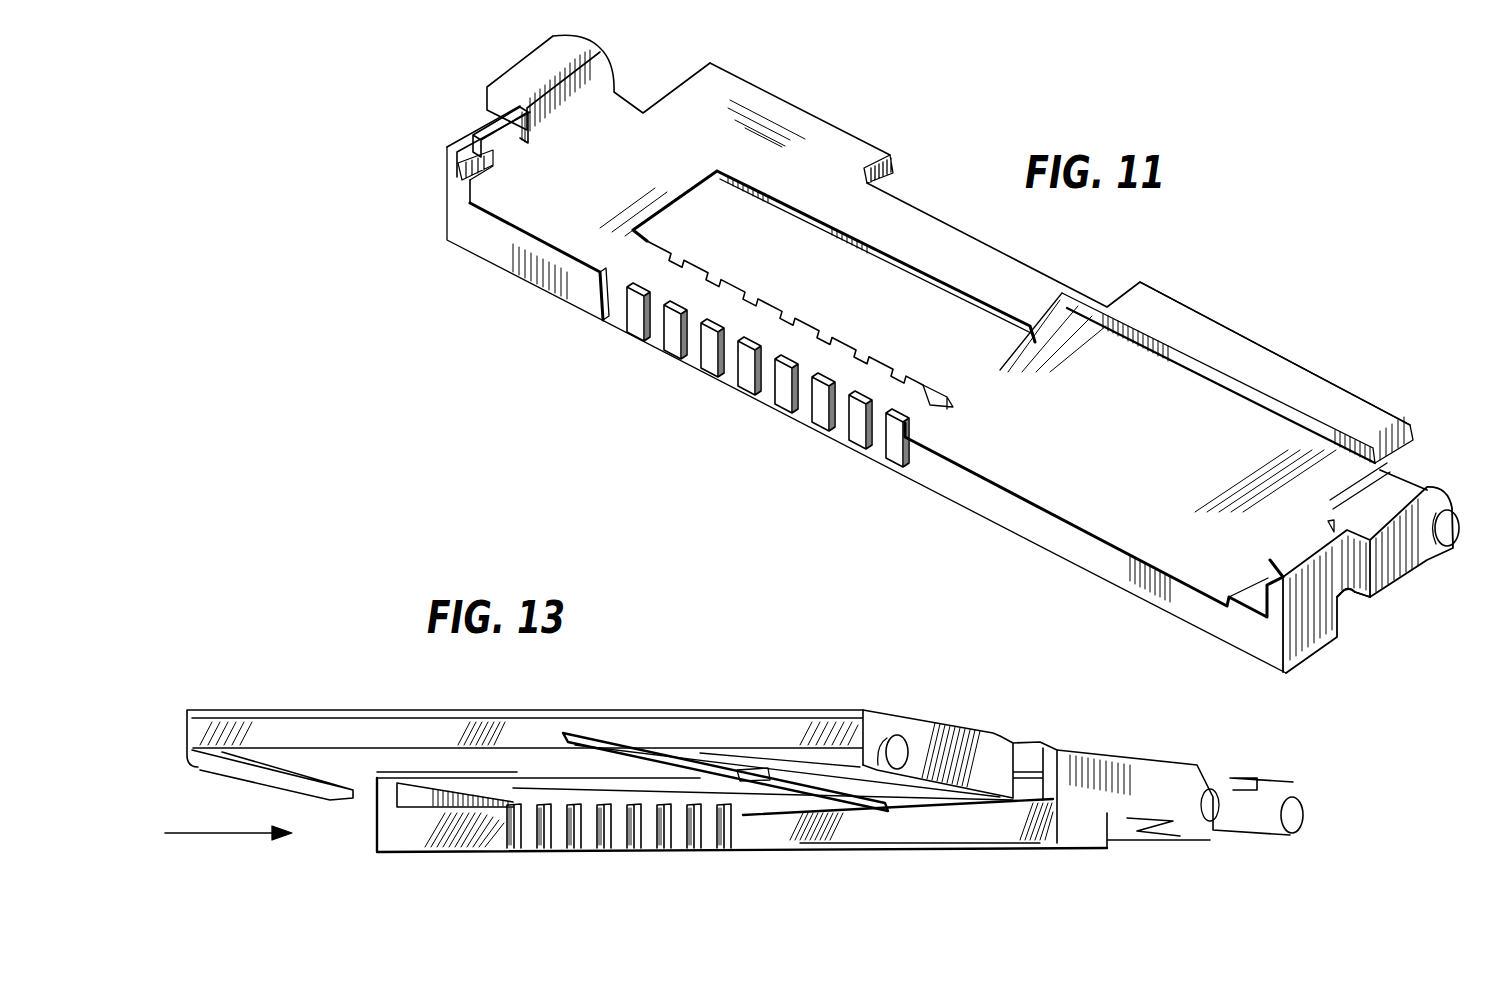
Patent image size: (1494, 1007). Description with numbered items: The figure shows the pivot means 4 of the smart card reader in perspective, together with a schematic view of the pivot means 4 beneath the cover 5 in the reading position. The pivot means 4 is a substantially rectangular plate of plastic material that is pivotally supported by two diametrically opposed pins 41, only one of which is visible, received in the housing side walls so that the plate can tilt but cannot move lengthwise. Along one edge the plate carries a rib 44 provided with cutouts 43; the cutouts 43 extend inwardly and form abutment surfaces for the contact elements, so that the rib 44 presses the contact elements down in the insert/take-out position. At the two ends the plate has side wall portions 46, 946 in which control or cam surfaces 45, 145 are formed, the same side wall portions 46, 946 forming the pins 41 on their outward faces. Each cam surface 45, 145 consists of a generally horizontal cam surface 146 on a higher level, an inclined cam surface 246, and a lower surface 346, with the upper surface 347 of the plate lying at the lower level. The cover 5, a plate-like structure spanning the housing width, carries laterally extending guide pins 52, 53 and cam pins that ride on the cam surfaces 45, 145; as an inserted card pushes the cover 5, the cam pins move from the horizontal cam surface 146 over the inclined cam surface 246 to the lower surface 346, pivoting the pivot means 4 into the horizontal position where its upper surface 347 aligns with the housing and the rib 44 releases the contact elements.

In FIG. 11, the pivot means 4 is at (1318, 362).
In FIG. 13, the pivot means 4 is at (947, 845).
In FIG. 13, the cover 5 is at (356, 712).
In FIG. 11, the pins 41 is at (1460, 528).
In FIG. 11, the cutouts 43 is at (740, 287).
In FIG. 11, the rib 44 is at (815, 355).
In FIG. 11, the cam surface 45 is at (478, 132).
In FIG. 11, the side wall portion 46 is at (532, 72).
In FIG. 13, the guide pin 52 is at (903, 747).
In FIG. 13, the guide pin 53 is at (1296, 815).
In FIG. 11, the cam surface 145 is at (1270, 596).
In FIG. 11, the horizontal cam surface 146 is at (455, 187).
In FIG. 11, the inclined cam surface 246 is at (505, 160).
In FIG. 11, the lower surface 346 is at (530, 140).
In FIG. 11, the upper surface 347 is at (760, 118).
In FIG. 11, the side wall portion 946 is at (1385, 562).